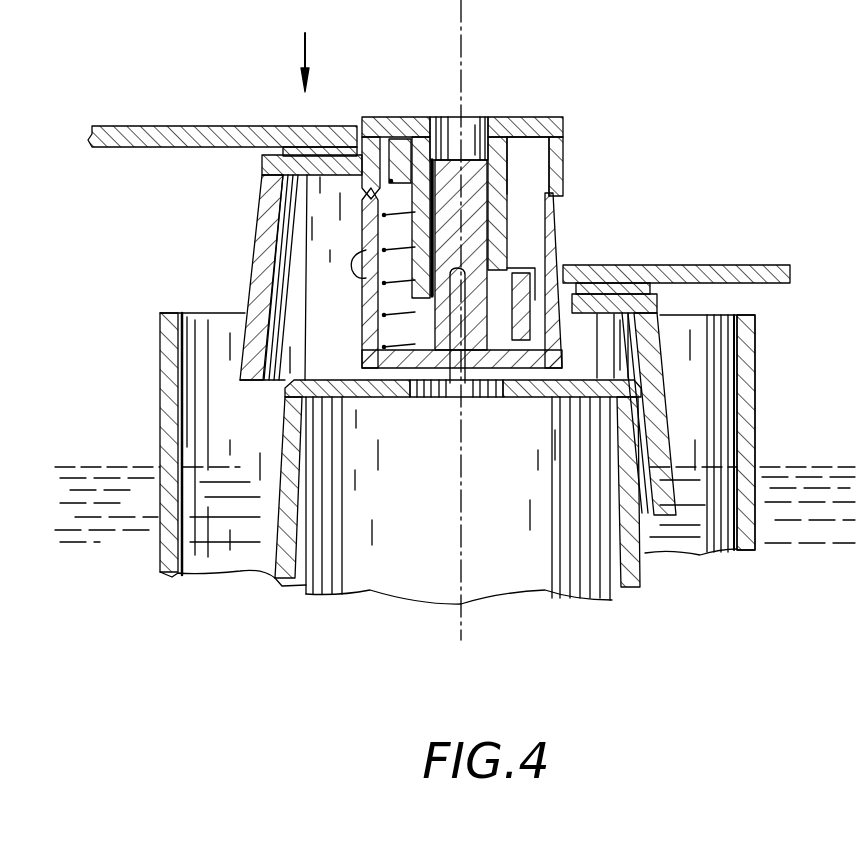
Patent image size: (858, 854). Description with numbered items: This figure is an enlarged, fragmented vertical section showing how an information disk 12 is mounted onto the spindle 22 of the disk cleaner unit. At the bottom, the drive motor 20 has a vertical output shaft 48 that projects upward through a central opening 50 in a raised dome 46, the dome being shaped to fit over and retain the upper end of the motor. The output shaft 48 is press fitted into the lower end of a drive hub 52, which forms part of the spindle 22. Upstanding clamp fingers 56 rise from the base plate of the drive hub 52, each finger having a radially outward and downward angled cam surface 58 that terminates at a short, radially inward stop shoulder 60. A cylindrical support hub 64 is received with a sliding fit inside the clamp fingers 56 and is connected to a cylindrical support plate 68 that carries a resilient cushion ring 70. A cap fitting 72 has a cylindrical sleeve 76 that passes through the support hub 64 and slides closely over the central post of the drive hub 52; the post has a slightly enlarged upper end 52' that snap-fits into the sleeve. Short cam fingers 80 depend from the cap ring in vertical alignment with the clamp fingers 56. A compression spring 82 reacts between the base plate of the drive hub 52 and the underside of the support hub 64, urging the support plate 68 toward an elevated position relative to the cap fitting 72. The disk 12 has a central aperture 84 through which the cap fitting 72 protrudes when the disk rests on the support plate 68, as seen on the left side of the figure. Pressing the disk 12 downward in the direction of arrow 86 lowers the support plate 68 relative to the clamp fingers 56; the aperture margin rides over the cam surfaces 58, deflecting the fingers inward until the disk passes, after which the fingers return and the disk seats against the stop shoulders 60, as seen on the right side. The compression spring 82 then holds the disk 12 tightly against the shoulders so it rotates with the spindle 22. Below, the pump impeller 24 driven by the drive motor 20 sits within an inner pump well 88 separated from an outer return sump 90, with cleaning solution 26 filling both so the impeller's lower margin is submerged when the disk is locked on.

The information disk 12 is at (170, 125).
The drive motor 20 is at (405, 606).
The spindle 22 is at (647, 74).
The pump impeller 24 is at (695, 336).
The cleaning solution 26 is at (692, 545).
The raised dome 46 is at (280, 588).
The output shaft 48 is at (458, 386).
The central opening 50 is at (500, 388).
The drive hub 52 is at (487, 243).
The enlarged upper end 52' is at (479, 111).
The clamp fingers 56 is at (363, 322).
The cam surface 58 is at (363, 222).
The stop shoulder 60 is at (328, 335).
The support hub 64 is at (398, 150).
The support plate 68 is at (300, 176).
The cushion ring 70 is at (283, 150).
The cap fitting 72 is at (550, 116).
The sleeve 76 is at (508, 194).
The cam fingers 80 is at (563, 147).
The compression spring 82 is at (375, 338).
The central aperture 84 is at (361, 135).
The arrow 86 is at (302, 53).
The inner pump well 88 is at (699, 469).
The outer return sump 90 is at (770, 467).